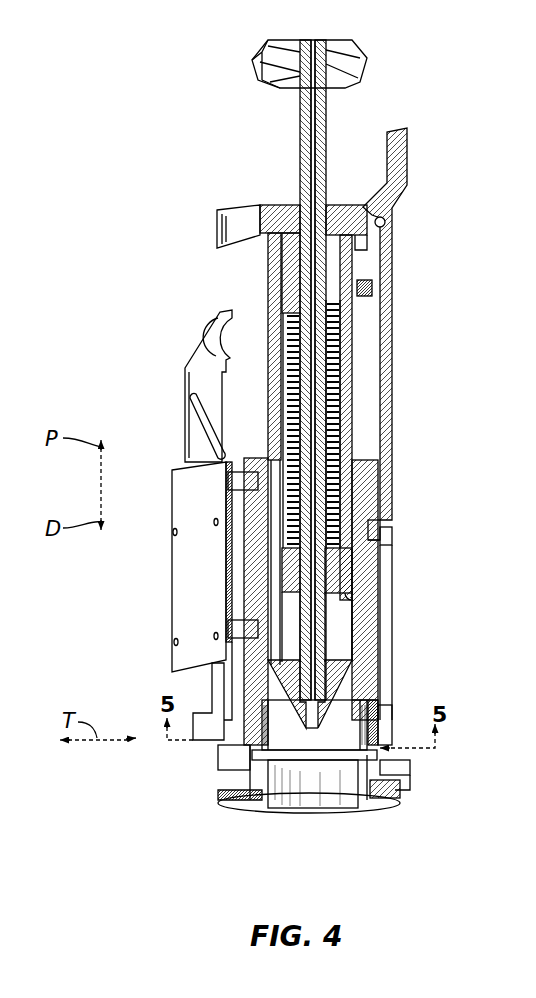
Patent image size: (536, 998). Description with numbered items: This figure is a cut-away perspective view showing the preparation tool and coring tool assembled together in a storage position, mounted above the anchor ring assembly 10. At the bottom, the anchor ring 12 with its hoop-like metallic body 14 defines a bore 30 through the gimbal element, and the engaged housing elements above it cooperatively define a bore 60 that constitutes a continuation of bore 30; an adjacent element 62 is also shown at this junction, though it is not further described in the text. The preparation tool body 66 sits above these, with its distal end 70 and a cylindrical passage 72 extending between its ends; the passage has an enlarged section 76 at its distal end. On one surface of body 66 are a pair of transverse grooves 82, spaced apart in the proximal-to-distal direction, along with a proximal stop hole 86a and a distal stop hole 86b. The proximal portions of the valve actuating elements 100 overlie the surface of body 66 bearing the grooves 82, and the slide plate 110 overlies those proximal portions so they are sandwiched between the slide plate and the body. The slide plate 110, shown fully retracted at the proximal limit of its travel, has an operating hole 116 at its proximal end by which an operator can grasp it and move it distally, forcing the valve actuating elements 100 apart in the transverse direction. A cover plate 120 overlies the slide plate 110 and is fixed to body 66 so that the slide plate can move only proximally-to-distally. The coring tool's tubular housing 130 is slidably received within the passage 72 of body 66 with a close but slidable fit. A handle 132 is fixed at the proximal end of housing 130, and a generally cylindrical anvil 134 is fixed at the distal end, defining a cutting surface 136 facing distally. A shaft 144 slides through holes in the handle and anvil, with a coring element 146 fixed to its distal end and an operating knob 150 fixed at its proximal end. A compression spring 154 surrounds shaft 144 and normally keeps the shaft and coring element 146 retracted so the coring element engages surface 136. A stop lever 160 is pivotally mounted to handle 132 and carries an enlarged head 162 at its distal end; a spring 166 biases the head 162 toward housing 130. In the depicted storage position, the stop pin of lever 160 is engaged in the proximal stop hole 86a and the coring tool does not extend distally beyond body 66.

The anchor ring assembly 10 is at (226, 786).
The anchor ring 12 is at (386, 806).
The anchor ring body 14 is at (406, 803).
The interior bore 30 is at (283, 798).
The bore 60 is at (352, 752).
The plate 62 is at (305, 758).
The preparation tool body 66 is at (384, 557).
The distal end 70 is at (400, 725).
The cylindrical passage 72 is at (356, 640).
The enlarged section 76 is at (369, 715).
The grooves 82 is at (240, 478).
The proximal stop hole 86a is at (377, 526).
The distal stop hole 86b is at (390, 720).
The valve actuating elements 100 is at (212, 708).
The slide plate 110 is at (322, 382).
The operating hole 116 is at (221, 340).
The cover plate 120 is at (172, 543).
The tubular housing 130 is at (353, 385).
The handle 132 is at (238, 210).
The anvil 134 is at (283, 552).
The cutting surface 136 is at (356, 612).
The shaft 144 is at (330, 128).
The coring element 146 is at (357, 672).
The operating knob 150 is at (344, 42).
The compression spring 154 is at (290, 340).
The stop lever 160 is at (393, 432).
The enlarged head 162 is at (393, 533).
The spring 166 is at (368, 282).